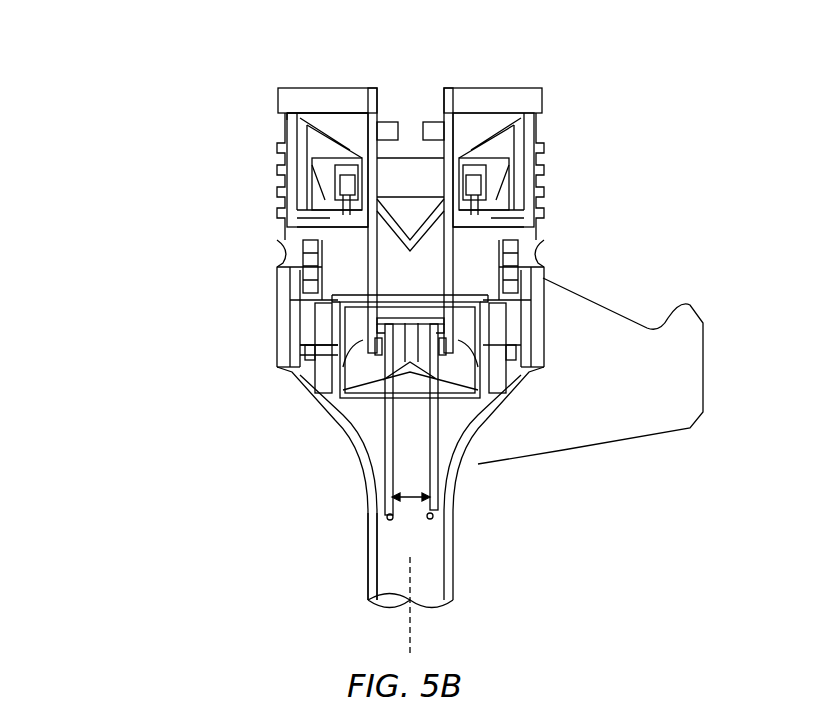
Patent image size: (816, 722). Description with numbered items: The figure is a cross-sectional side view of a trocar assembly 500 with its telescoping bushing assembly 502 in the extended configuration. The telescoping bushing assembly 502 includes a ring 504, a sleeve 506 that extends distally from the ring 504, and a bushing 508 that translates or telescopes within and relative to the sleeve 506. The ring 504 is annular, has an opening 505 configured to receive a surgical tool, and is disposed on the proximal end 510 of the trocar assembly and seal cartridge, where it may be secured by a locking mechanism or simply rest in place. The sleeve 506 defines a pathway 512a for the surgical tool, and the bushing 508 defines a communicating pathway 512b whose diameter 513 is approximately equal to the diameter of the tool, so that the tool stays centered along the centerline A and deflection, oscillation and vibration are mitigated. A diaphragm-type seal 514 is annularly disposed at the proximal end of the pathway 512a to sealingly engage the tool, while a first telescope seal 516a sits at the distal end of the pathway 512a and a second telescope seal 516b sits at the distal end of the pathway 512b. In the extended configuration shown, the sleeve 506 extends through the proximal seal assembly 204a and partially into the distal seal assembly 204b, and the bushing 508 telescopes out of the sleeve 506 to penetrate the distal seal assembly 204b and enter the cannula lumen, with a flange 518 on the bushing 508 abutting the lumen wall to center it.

The trocar assembly 500 is at (115, 97).
The telescoping bushing assembly 502 is at (289, 78).
The ring 504 is at (322, 92).
The sleeve 506 is at (363, 120).
The opening 505 is at (410, 96).
The seal 514 is at (432, 130).
The proximal end 510 is at (580, 102).
The proximal seal assembly 204a is at (357, 233).
The pathway 512a is at (398, 273).
The first telescope seal 516a is at (443, 348).
The distal seal assembly 204b is at (337, 348).
The pathway 512b is at (405, 422).
The bushing 508 is at (435, 463).
The second telescope seal 516b is at (387, 515).
The flange 518 is at (375, 523).
The diameter 513 is at (415, 500).
The centerline A is at (410, 632).